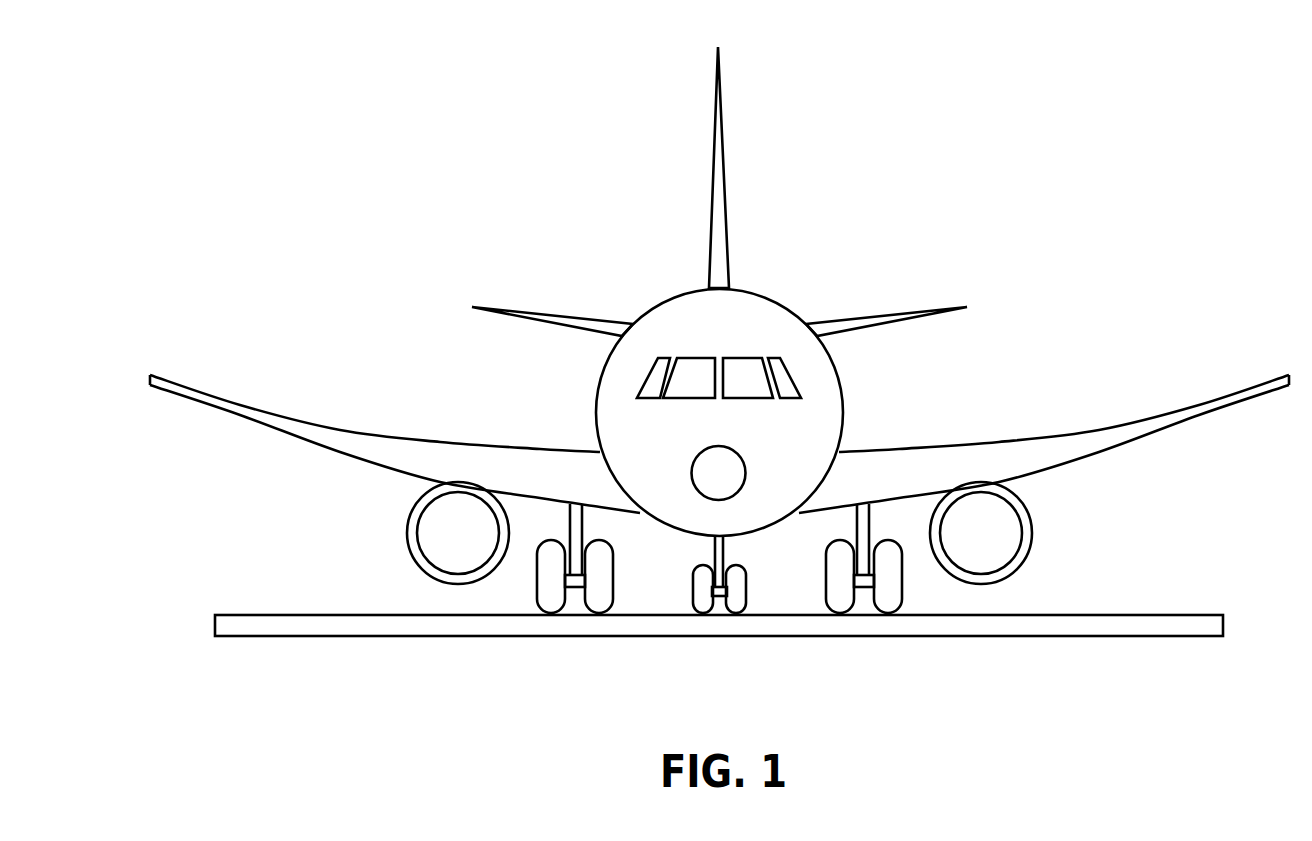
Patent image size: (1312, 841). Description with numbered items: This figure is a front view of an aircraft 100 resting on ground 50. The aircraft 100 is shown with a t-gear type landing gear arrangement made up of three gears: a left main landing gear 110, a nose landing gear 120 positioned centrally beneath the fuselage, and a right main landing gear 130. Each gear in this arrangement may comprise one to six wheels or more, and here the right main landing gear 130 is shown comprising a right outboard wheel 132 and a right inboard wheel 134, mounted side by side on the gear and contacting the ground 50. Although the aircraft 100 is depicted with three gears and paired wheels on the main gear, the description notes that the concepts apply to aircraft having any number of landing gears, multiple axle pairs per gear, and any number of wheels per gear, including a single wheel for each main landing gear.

The aircraft 100 is at (719, 375).
The ground 50 is at (1090, 615).
The left main landing gear 110 is at (903, 600).
The nose landing gear 120 is at (747, 603).
The right main landing gear 130 is at (572, 603).
The right outboard wheel 132 is at (552, 613).
The right inboard wheel 134 is at (597, 613).